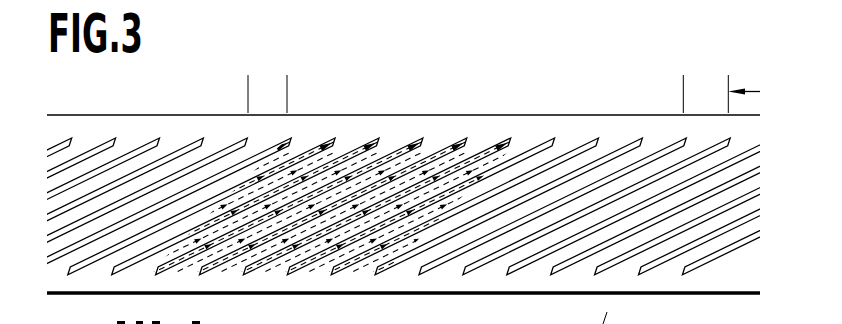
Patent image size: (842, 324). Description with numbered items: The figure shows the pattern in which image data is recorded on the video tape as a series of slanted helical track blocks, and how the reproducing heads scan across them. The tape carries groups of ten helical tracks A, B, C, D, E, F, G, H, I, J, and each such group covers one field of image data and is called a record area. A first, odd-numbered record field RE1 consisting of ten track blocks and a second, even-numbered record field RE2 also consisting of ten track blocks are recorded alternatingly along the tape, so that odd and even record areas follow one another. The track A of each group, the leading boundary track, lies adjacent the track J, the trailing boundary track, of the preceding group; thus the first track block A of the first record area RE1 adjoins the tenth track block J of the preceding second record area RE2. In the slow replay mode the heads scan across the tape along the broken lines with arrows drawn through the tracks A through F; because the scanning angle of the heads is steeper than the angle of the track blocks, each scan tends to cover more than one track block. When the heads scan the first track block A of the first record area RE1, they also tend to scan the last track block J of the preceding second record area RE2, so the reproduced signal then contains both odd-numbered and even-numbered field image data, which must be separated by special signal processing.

The leading boundary track A is at (384, 197).
The helical track B is at (206, 197).
The helical track C is at (250, 197).
The helical track D is at (294, 197).
The helical track E is at (337, 197).
The helical track F is at (260, 197).
The helical track G is at (282, 197).
The helical track H is at (304, 197).
The helical track I is at (325, 197).
The trailing boundary track J is at (346, 197).
The first record field RE1 is at (300, 92).
The second record field RE2 is at (48, 92).